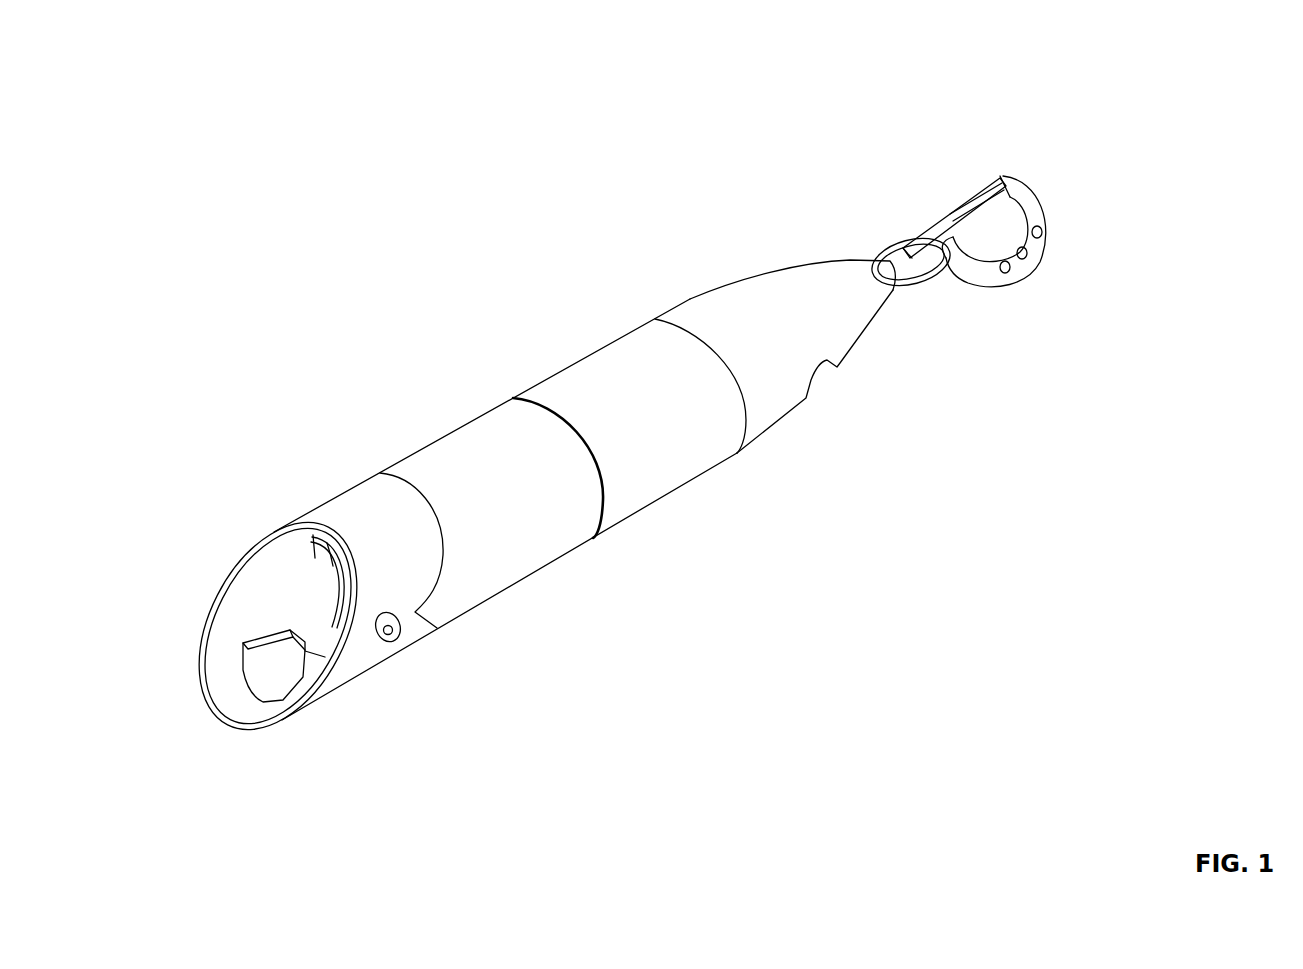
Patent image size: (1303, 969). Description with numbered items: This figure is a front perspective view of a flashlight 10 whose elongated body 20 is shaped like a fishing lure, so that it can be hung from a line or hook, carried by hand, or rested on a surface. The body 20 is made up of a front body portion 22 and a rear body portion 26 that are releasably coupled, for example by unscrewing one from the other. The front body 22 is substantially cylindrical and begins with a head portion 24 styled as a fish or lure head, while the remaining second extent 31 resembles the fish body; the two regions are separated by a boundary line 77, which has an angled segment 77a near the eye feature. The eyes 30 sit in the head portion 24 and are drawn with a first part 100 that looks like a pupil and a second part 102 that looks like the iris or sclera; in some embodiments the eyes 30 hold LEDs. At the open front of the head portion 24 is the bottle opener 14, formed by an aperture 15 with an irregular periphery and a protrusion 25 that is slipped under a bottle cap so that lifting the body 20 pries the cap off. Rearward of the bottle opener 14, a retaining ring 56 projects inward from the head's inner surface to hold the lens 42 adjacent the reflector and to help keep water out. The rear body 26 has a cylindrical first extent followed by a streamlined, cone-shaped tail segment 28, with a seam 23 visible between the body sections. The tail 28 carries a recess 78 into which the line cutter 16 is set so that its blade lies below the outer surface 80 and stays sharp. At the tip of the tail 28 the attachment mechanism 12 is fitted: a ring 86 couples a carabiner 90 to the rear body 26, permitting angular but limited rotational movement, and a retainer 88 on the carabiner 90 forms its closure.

The flashlight 10 is at (201, 84).
The attachment mechanism 12 is at (1008, 263).
The bottle opener 14 is at (230, 707).
The aperture 15 is at (240, 675).
The line cutter 16 is at (815, 381).
The recess 78 is at (834, 403).
The body 20 is at (641, 631).
The front body portion 22 is at (316, 394).
The tail seam 23 is at (683, 478).
The head portion 24 is at (347, 668).
The protrusion 25 is at (323, 653).
The rear body portion 26 is at (629, 401).
The tail segment 28 is at (793, 280).
The eyes 30 is at (439, 592).
The second extent 31 is at (547, 543).
The lens 42 is at (333, 576).
The retaining ring 56 is at (325, 602).
The boundary line 77 is at (427, 481).
The angled segment 77a is at (415, 612).
The outer surface 80 is at (812, 341).
The ring 86 is at (923, 281).
The retainer 88 is at (977, 197).
The carabiner 90 is at (1043, 215).
The first part 100 is at (388, 637).
The second part 102 is at (400, 622).